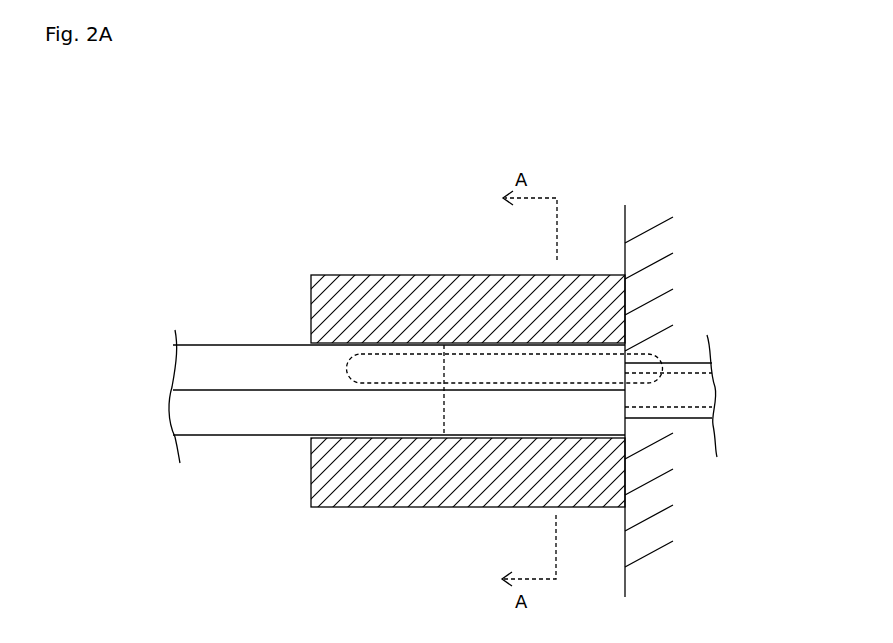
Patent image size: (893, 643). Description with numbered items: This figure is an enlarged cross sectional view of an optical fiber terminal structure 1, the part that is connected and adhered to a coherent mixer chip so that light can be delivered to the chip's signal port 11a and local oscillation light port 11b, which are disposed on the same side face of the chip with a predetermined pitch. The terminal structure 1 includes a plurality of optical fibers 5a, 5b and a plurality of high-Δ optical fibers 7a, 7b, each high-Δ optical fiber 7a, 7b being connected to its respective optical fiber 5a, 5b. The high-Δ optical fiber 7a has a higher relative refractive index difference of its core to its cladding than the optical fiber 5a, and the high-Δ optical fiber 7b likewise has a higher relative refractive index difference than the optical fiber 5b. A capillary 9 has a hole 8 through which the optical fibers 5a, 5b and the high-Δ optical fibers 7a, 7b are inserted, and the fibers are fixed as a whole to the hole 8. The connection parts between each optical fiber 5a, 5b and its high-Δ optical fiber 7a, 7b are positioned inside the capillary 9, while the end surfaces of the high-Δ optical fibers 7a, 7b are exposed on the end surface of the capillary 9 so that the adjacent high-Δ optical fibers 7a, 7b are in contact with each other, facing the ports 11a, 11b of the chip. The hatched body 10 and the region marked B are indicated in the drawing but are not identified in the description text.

The optical fiber terminal structure 1 is at (472, 177).
The optical fiber 5a is at (298, 365).
The optical fiber 5b is at (288, 420).
The high-Δ optical fiber 7a is at (489, 363).
The high-Δ optical fiber 7b is at (486, 430).
The hole 8 is at (512, 342).
The capillary 9 is at (605, 536).
The wall 10 is at (742, 244).
The signal port 11a is at (627, 352).
The local oscillation light port 11b is at (645, 408).
The region B is at (547, 354).